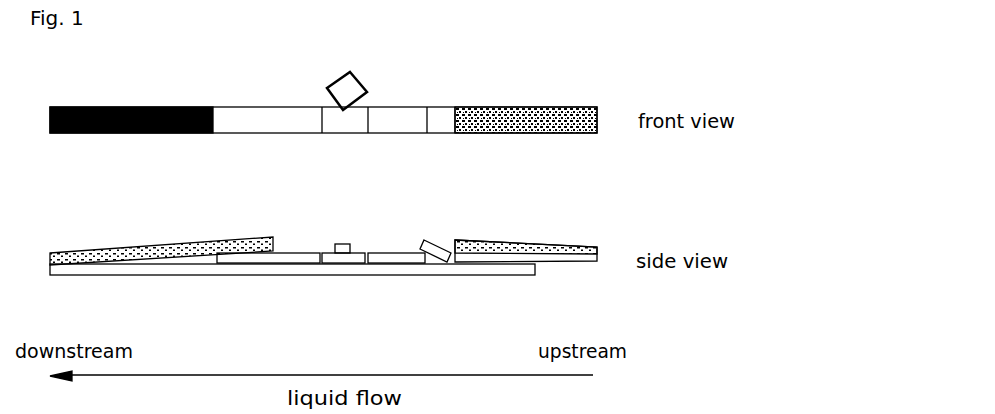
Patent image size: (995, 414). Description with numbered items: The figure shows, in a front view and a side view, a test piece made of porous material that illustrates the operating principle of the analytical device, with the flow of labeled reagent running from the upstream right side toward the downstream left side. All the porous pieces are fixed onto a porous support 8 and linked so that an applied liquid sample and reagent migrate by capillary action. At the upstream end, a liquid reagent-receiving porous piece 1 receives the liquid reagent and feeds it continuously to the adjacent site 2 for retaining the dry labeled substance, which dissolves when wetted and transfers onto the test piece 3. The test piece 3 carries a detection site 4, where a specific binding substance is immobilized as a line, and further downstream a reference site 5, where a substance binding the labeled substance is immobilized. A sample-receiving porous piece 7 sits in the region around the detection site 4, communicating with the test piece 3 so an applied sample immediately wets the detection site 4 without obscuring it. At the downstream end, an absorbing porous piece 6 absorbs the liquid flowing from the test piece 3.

The liquid reagent-receiving porous piece 1 is at (525, 158).
The site for retaining the labeled substance 2 is at (443, 158).
The test piece 3 is at (393, 158).
The detection site 4 is at (365, 158).
The reference site 5 is at (321, 158).
The absorbing porous piece 6 is at (138, 158).
The sample-receiving porous piece 7 is at (308, 82).
The porous support 8 is at (487, 300).